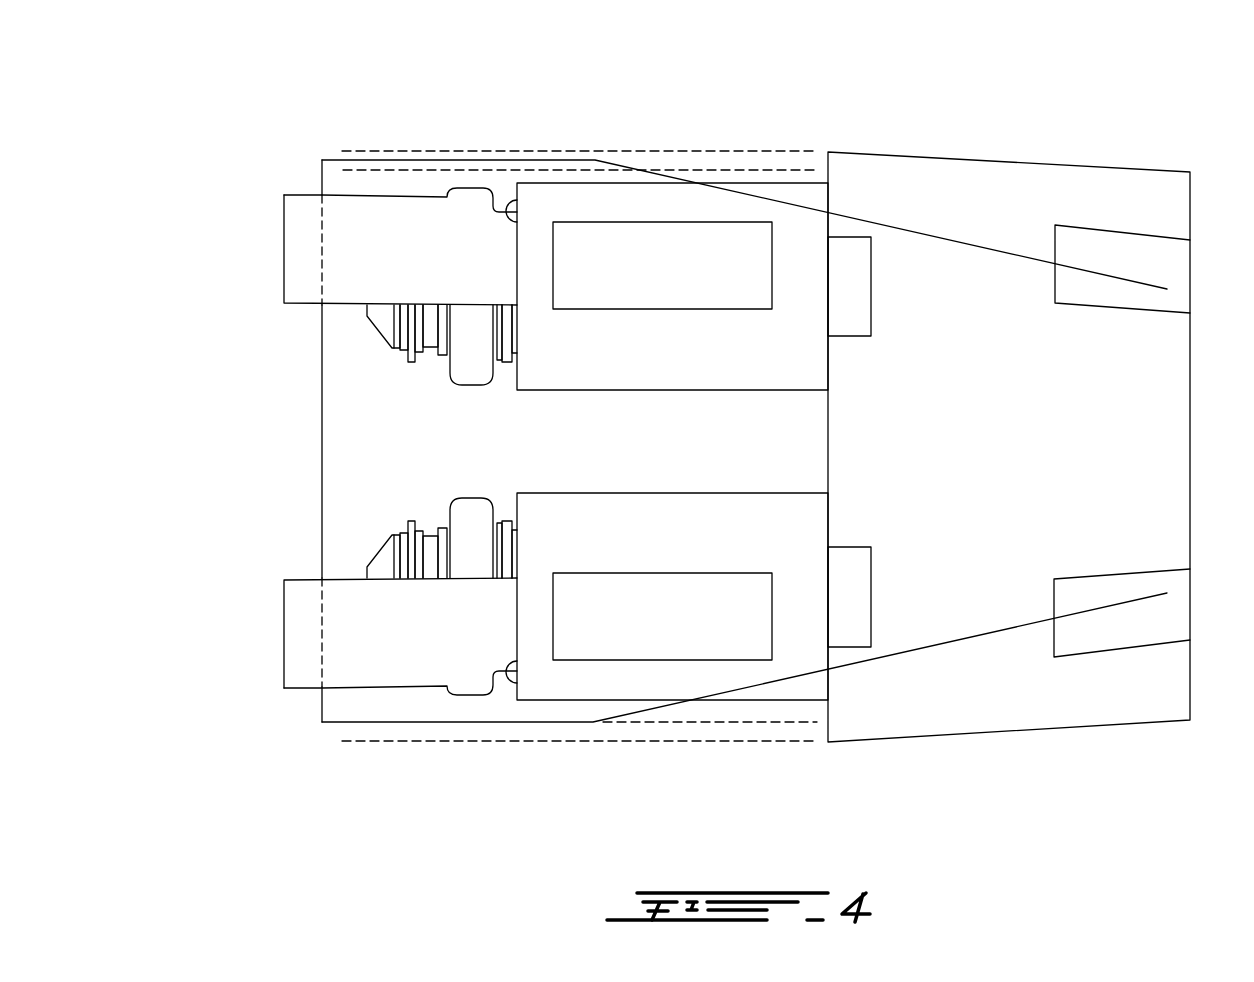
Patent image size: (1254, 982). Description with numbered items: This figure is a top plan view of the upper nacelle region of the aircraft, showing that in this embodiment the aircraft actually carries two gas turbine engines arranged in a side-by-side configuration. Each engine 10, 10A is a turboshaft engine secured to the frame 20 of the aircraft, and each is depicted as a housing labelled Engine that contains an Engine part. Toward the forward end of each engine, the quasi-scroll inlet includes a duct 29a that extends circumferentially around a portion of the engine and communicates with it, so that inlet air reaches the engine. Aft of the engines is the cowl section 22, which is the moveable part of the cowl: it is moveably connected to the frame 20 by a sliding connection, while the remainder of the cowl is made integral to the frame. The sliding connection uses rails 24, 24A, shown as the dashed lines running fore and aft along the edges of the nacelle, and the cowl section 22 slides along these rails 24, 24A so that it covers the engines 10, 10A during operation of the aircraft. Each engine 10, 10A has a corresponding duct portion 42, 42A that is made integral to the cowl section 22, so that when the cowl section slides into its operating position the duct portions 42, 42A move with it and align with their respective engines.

The engine 10 is at (573, 686).
The engine 10A is at (641, 178).
The frame 20 is at (631, 466).
The cowl section 22 is at (1040, 195).
The rail 24 is at (742, 740).
The rail 24A is at (803, 170).
The duct 29a is at (470, 372).
The duct portion 42 is at (1083, 636).
The duct portion 42A is at (1125, 260).